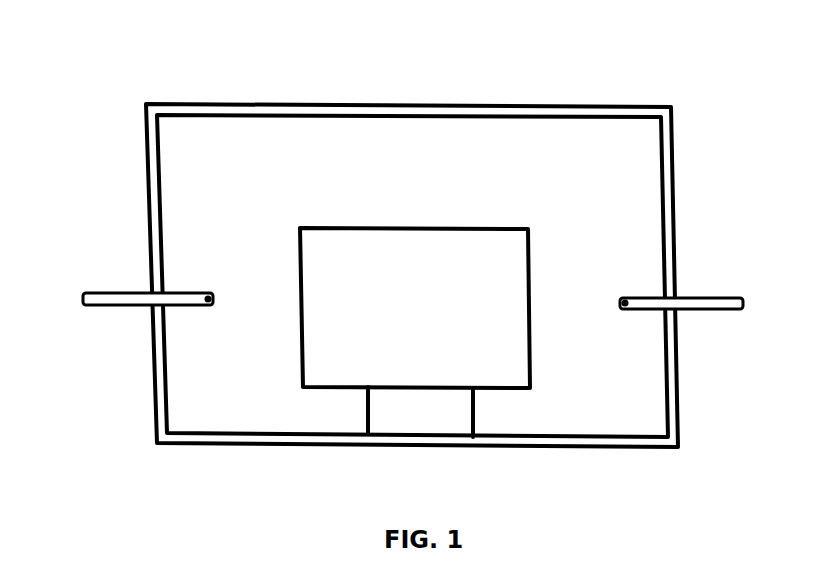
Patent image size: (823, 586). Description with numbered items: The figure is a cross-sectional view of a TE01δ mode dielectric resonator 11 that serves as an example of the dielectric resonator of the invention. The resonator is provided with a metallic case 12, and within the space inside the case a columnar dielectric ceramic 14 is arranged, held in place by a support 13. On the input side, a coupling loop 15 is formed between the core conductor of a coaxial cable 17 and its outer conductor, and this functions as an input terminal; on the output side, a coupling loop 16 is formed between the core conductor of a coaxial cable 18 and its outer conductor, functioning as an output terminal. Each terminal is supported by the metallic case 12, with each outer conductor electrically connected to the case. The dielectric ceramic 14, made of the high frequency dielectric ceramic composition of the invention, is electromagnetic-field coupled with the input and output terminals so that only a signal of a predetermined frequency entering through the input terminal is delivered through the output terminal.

The dielectric resonator 11 is at (172, 52).
The metallic case 12 is at (394, 104).
The support 13 is at (476, 412).
The dielectric ceramic 14 is at (454, 228).
The coupling loop 15 is at (205, 292).
The coupling loop 16 is at (625, 300).
The coaxial cable 17 is at (90, 292).
The coaxial cable 18 is at (722, 293).